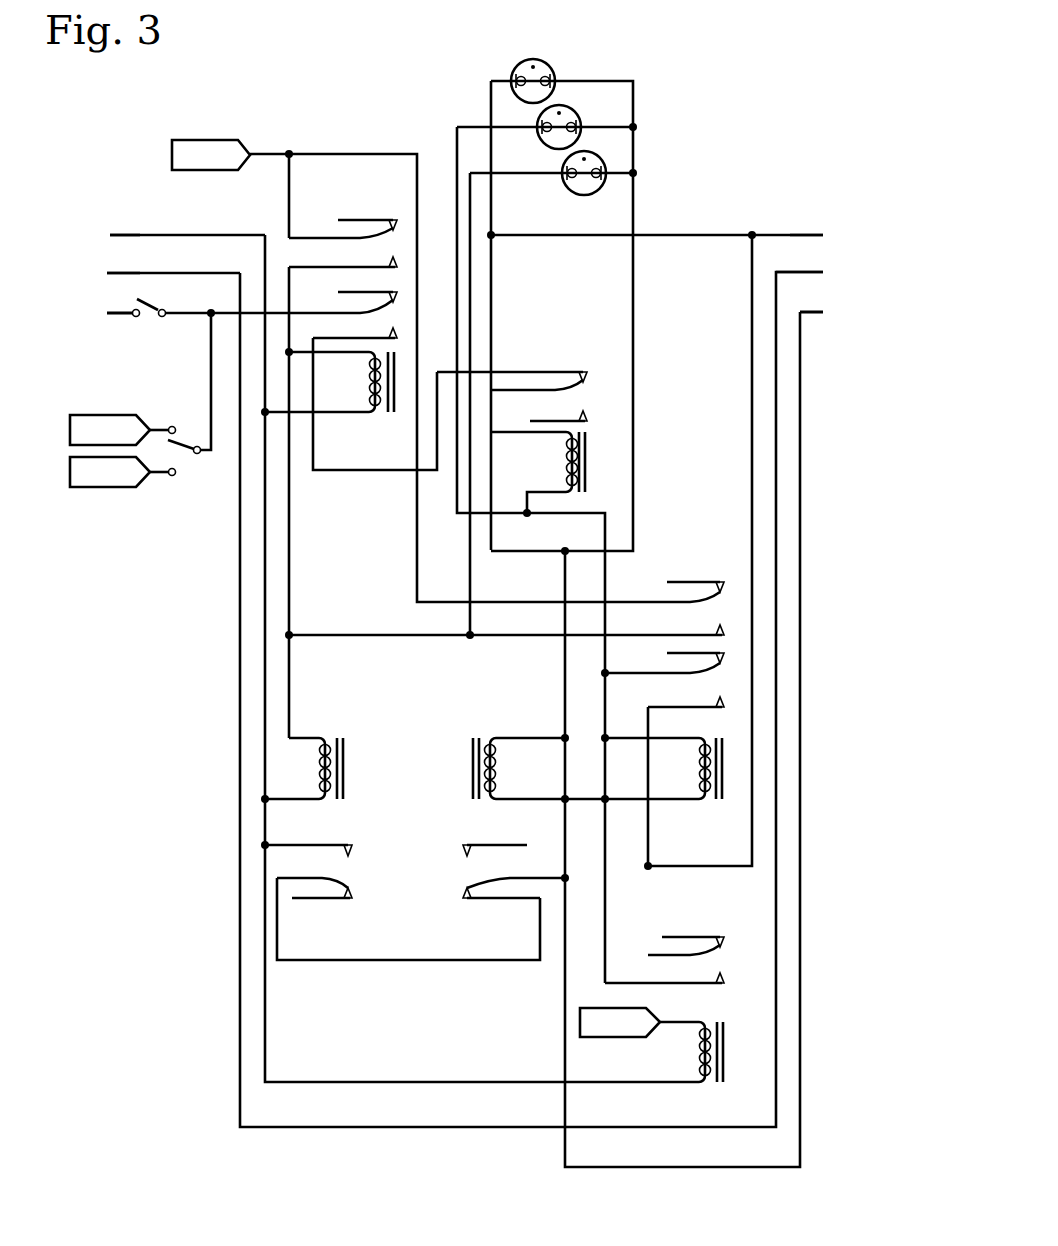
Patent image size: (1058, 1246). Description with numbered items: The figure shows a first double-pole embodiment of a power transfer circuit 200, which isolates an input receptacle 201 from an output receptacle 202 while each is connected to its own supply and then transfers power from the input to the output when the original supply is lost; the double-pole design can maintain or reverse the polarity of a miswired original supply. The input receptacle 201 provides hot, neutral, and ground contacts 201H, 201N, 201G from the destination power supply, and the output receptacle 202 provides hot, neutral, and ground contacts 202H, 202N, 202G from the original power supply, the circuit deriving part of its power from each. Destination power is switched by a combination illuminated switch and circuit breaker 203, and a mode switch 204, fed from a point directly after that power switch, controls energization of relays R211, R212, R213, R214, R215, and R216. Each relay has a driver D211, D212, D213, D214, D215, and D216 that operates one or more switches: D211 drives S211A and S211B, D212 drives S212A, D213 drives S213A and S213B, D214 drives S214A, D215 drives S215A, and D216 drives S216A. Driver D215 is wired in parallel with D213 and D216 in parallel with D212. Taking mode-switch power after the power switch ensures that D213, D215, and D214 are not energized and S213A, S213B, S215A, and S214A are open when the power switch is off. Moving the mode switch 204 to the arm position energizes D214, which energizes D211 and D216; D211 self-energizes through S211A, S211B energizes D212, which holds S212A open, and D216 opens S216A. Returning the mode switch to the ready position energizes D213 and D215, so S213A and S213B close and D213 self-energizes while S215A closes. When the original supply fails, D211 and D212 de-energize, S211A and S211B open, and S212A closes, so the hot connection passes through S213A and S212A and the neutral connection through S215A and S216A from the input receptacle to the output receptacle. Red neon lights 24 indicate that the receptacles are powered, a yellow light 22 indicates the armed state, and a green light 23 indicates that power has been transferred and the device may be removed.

The power transfer circuit 200 is at (786, 58).
The input receptacle 201 is at (77, 210).
The neutral contact of input receptacle 201N is at (92, 237).
The ground contact of input receptacle 201G is at (91, 276).
The hot contact of input receptacle 201H is at (89, 316).
The output receptacle 202 is at (856, 210).
The hot contact of output receptacle 202H is at (840, 236).
The ground contact of output receptacle 202G is at (833, 276).
The neutral contact of output receptacle 202N is at (845, 316).
The combination illuminated switch and circuit breaker 203 is at (143, 326).
The mode switch 204 is at (190, 471).
The yellow light 22 is at (558, 103).
The green light 23 is at (584, 150).
The red neon lights 24 is at (538, 60).
The relay R211 is at (690, 576).
The relay R212 is at (550, 358).
The relay R213 is at (356, 188).
The relay R214 is at (702, 903).
The relay R215 is at (356, 829).
The relay R216 is at (448, 836).
The relay switch S211A is at (664, 680).
The relay switch S211B is at (506, 609).
The first switch S212A is at (512, 398).
The relay switch S213A is at (343, 317).
The relay switch S213B is at (343, 245).
The relay switch S214A is at (664, 963).
The relay switch S215A is at (308, 871).
The relay switch S216A is at (514, 871).
The relay driver D211 is at (643, 768).
The relay driver D212 is at (538, 472).
The relay driver D213 is at (329, 382).
The relay driver D214 is at (680, 1052).
The relay driver D215 is at (304, 768).
The relay driver D216 is at (520, 768).